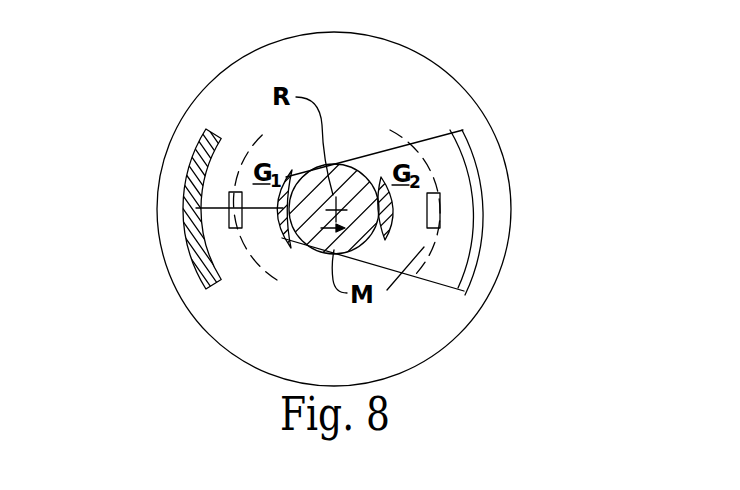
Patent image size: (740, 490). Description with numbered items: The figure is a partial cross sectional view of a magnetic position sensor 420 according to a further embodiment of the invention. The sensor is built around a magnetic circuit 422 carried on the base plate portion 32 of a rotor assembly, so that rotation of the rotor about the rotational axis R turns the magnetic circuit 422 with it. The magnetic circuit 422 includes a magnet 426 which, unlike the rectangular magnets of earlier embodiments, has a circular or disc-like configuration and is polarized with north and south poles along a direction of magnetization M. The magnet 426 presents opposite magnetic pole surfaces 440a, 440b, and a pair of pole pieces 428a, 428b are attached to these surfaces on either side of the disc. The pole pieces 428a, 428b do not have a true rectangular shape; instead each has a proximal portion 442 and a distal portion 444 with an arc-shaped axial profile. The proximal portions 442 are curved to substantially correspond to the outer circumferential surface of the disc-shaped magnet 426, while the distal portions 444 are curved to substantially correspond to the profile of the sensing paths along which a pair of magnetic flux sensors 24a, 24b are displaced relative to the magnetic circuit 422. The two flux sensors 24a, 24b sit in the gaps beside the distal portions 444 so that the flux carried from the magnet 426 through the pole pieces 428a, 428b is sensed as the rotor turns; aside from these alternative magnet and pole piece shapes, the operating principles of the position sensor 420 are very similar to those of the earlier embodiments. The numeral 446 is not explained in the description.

The magnetic position sensor 420 is at (482, 83).
The base plate portion 32 is at (410, 87).
The proximal portions 442 is at (277, 142).
The magnetic circuit 422 is at (465, 123).
The pole piece 428b is at (483, 177).
The inner arc segment 446 is at (458, 290).
The distal portions 444 is at (484, 243).
The magnetic flux sensor 24b is at (441, 210).
The magnetic flux sensor 24a is at (227, 212).
The pole piece 428a is at (173, 224).
The magnet 426 is at (363, 258).
The magnetic pole surface 440b is at (279, 202).
The magnetic pole surface 440a is at (385, 160).